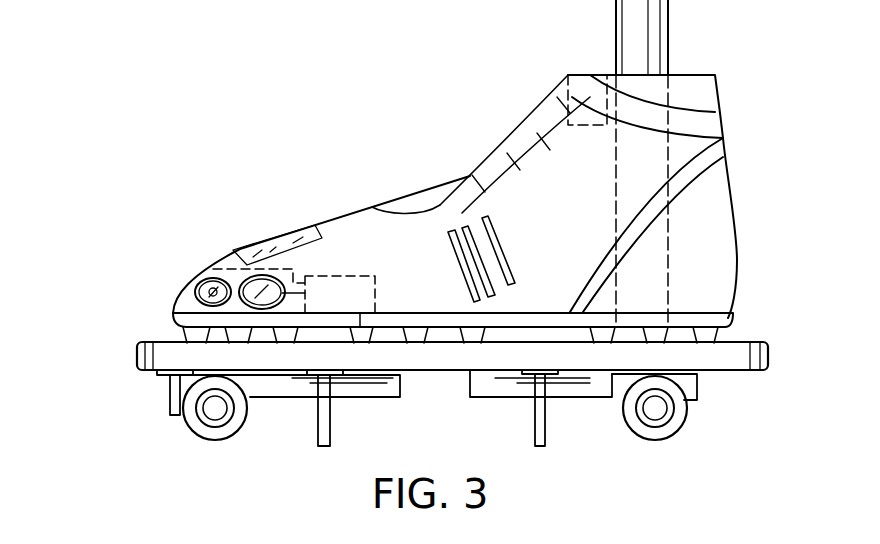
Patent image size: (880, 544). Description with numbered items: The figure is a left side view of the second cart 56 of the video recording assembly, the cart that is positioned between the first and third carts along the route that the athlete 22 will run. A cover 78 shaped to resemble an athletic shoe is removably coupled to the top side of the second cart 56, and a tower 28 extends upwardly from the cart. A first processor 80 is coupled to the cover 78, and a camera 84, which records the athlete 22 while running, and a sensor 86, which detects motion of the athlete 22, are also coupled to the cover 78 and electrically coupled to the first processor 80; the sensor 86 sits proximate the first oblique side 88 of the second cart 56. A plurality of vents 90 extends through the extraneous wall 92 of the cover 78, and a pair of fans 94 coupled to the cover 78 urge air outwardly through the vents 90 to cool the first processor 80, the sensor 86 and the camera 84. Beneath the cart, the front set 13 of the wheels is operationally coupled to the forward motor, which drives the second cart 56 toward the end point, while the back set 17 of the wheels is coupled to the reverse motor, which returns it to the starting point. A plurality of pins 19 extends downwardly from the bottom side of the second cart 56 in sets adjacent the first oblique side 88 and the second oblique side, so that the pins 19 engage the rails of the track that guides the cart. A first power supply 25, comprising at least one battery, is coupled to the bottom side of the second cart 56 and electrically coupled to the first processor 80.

The front set of wheels 13 is at (222, 441).
The back set of wheels 17 is at (677, 432).
The pins 19 is at (325, 449).
The athlete 22 is at (558, 398).
The first power supply 25 is at (597, 398).
The tower 28 is at (668, 13).
The second cart 56 is at (137, 344).
The cover 78 is at (405, 205).
The first processor 80 is at (352, 275).
The camera 84 is at (197, 283).
The sensor 86 is at (270, 275).
The first oblique side 88 is at (431, 371).
The vents 90 is at (448, 240).
The extraneous wall 92 is at (570, 150).
The fans 94 is at (568, 97).